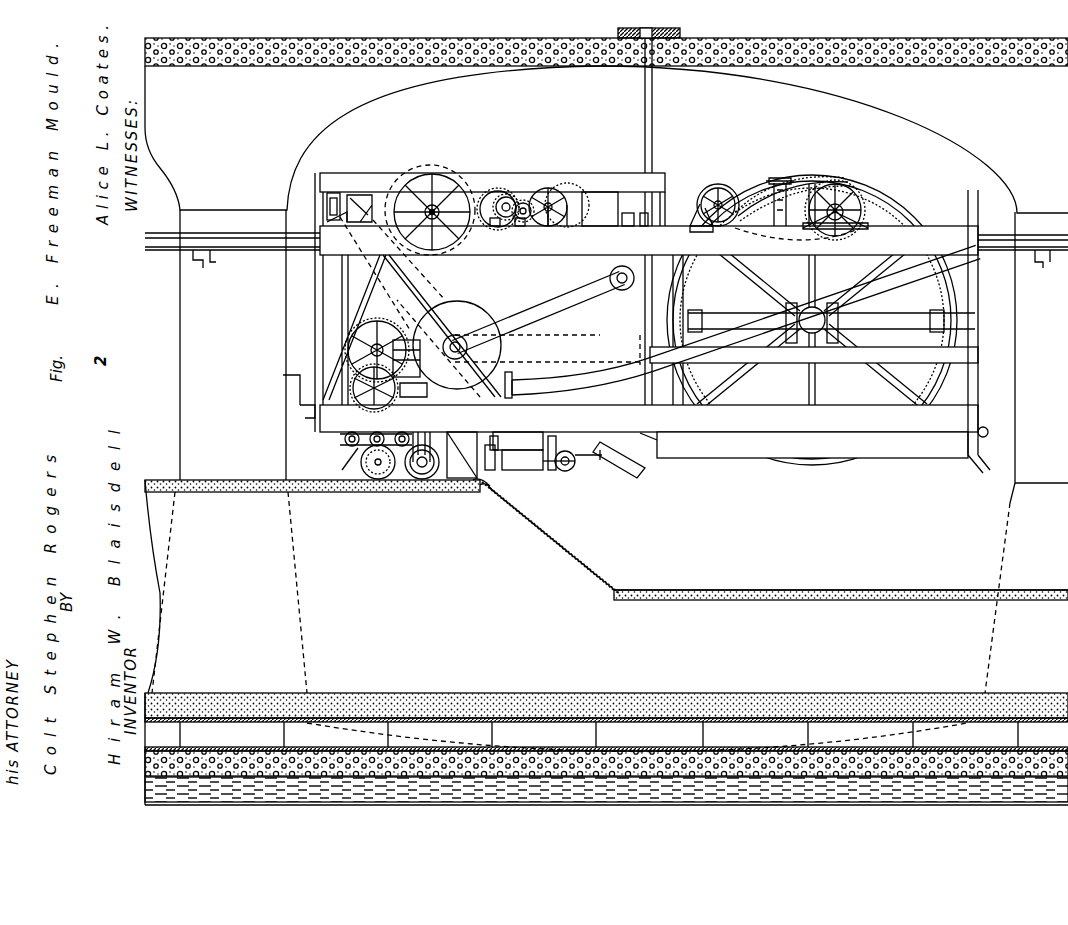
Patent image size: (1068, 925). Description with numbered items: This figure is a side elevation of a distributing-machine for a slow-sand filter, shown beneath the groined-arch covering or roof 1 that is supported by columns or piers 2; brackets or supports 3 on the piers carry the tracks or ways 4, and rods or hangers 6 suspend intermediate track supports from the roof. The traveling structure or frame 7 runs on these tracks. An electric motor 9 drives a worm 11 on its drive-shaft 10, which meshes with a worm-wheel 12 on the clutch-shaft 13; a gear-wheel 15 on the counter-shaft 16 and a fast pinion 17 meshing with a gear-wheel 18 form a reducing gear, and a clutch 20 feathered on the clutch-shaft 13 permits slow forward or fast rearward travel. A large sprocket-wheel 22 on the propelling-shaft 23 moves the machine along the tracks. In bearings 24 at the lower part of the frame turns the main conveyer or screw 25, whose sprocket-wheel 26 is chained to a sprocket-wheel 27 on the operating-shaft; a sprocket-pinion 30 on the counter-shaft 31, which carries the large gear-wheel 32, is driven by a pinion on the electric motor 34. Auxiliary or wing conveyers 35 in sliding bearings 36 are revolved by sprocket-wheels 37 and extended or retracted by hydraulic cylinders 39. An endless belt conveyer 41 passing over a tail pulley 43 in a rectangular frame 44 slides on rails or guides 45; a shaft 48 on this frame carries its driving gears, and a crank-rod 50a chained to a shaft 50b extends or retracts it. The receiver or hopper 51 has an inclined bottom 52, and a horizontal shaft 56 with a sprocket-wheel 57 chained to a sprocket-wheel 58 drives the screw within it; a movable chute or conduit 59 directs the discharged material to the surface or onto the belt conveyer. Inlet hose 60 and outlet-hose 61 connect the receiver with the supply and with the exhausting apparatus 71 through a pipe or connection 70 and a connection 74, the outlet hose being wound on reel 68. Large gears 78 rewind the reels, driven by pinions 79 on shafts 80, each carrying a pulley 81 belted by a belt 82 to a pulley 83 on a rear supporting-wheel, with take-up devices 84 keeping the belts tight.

The covering or roof 1 is at (606, 125).
The columns or piers 2 is at (624, 346).
The brackets or supports 3 is at (242, 262).
The tracks or ways 4 is at (256, 243).
The rods or hangers 6 is at (655, 118).
The traveling structure or frame 7 is at (652, 323).
The electric motor 9 is at (600, 209).
The drive-shaft 10 is at (548, 228).
The worm 11 is at (520, 228).
The worm-wheel 12 is at (495, 228).
The clutch-shaft 13 is at (523, 200).
The gear-wheel 15 is at (578, 190).
The counter-shaft 16 is at (552, 190).
The fast pinion 17 is at (570, 228).
The gear-wheel 18 is at (493, 192).
The clutch 20 is at (506, 194).
The large sprocket-wheel 22 is at (440, 168).
The propelling-shaft 23 is at (433, 220).
The bearings 24 is at (432, 442).
The main conveyer or screw 25 is at (425, 480).
The sprocket-wheel 26 is at (490, 500).
The sprocket-wheel 27 is at (375, 410).
The sprocket-pinion 30 is at (447, 347).
The counter-shaft 31 is at (327, 200).
The large gear-wheel 32 is at (371, 350).
The electric motor 34 is at (420, 368).
The auxiliary or wing conveyers 35 is at (378, 480).
The sliding or reciprocating bearings 36 is at (332, 464).
The sprocket-wheel 37 is at (378, 459).
The hydraulic cylinders 39 is at (346, 474).
The endless belt conveyer 41 is at (533, 474).
The tail pulley 43 is at (567, 473).
The rectangular frame 44 is at (597, 470).
The rails or guides 45 is at (498, 426).
The shaft 48 is at (599, 455).
The crank-rod 50a is at (298, 402).
The shaft 50b is at (477, 488).
The receiver or hopper 51 is at (547, 336).
The inclined or oblique bottom 52 is at (458, 306).
The horizontal shaft 56 is at (364, 196).
The sprocket-wheel 57 is at (338, 214).
The sprocket-wheel 58 is at (318, 410).
The chute or conduit 59 is at (521, 381).
The inlet hose 60 is at (462, 455).
The outlet-hose 61 is at (895, 207).
The reel 68 is at (705, 313).
The pipe or connection 70 is at (626, 352).
The exhausting apparatus 71 is at (457, 345).
The connection 74 is at (538, 316).
The large gears 78 is at (908, 220).
The pinions 79 is at (704, 232).
The shafts 80 is at (722, 196).
The pulley 81 is at (713, 204).
The belt 82 is at (762, 194).
The pulley 83 is at (848, 195).
The take-up devices 84 is at (786, 180).